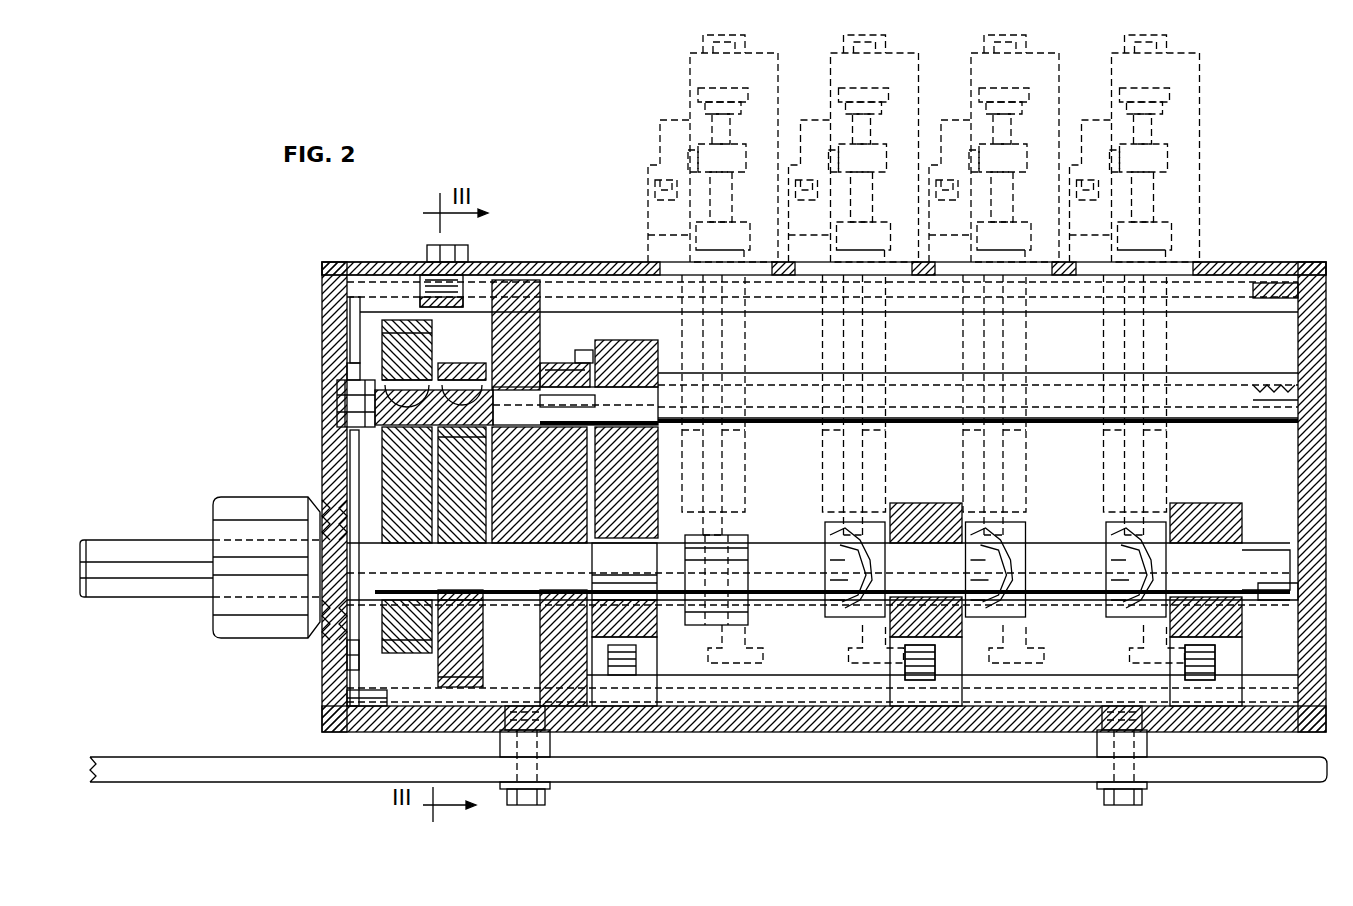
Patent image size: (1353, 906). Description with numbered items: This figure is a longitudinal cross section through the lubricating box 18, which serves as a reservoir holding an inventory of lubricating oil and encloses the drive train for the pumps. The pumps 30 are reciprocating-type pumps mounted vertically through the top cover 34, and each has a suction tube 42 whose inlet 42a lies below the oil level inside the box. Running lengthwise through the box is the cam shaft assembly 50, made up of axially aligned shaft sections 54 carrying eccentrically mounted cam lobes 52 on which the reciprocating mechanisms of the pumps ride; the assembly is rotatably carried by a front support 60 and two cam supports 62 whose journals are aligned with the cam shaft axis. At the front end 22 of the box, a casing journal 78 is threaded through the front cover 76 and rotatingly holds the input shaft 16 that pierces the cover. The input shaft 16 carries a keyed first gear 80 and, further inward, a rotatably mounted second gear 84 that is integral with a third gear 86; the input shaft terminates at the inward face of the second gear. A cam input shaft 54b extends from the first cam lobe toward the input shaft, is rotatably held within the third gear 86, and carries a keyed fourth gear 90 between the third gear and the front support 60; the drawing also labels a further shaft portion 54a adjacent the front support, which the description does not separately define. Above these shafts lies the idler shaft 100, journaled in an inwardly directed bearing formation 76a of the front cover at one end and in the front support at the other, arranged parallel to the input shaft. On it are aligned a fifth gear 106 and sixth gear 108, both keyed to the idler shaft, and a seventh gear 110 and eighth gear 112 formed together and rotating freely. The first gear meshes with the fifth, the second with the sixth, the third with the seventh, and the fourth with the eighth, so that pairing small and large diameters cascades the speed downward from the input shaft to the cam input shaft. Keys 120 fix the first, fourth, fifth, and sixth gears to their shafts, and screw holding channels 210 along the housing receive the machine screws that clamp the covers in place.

The input shaft 16 is at (165, 540).
The lubricating box 18 is at (514, 256).
The front end 22 is at (322, 280).
The pumps 30 is at (760, 52).
The top cover 34 is at (605, 262).
The suction tube 42 is at (752, 505).
The inlet 42a is at (763, 660).
The cam shaft assembly 50 is at (1043, 543).
The cam lobes 52 is at (735, 535).
The shaft section 54 is at (785, 545).
The end cam block 54a is at (650, 630).
The cam input shaft 54b is at (548, 612).
The front support 60 is at (637, 340).
The cam supports 62 is at (1242, 641).
The front cover 76 is at (347, 298).
The bearing formation 76a is at (350, 378).
The casing journal 78 is at (268, 497).
The first gear 80 is at (322, 648).
The second gear 84 is at (347, 690).
The third gear 86 is at (515, 605).
The fourth gear 90 is at (573, 728).
The idler shaft 100 is at (337, 405).
The fifth gear 106 is at (405, 330).
The sixth gear 108 is at (476, 320).
The seventh gear 110 is at (550, 300).
The eighth gear 112 is at (577, 360).
The keys 120 is at (322, 530).
The screw holding channels 210 is at (1240, 373).